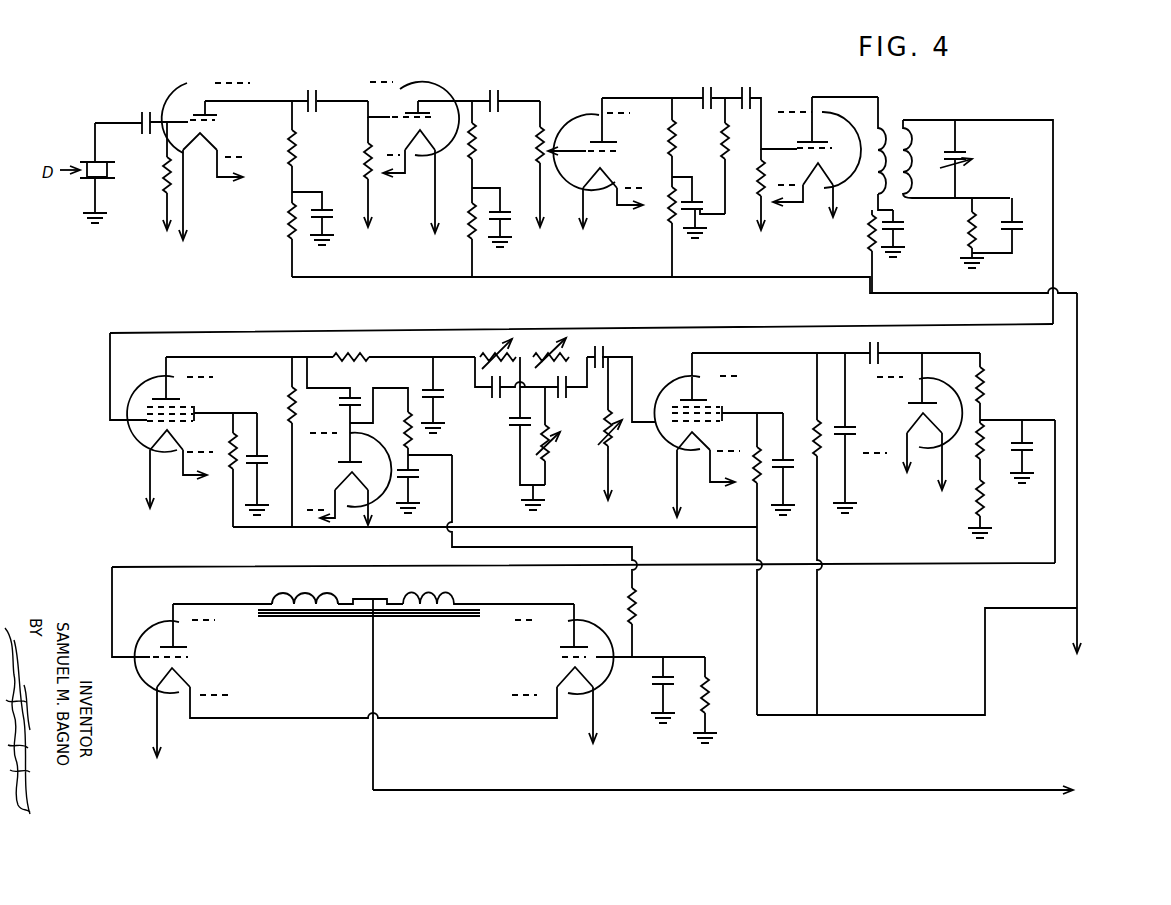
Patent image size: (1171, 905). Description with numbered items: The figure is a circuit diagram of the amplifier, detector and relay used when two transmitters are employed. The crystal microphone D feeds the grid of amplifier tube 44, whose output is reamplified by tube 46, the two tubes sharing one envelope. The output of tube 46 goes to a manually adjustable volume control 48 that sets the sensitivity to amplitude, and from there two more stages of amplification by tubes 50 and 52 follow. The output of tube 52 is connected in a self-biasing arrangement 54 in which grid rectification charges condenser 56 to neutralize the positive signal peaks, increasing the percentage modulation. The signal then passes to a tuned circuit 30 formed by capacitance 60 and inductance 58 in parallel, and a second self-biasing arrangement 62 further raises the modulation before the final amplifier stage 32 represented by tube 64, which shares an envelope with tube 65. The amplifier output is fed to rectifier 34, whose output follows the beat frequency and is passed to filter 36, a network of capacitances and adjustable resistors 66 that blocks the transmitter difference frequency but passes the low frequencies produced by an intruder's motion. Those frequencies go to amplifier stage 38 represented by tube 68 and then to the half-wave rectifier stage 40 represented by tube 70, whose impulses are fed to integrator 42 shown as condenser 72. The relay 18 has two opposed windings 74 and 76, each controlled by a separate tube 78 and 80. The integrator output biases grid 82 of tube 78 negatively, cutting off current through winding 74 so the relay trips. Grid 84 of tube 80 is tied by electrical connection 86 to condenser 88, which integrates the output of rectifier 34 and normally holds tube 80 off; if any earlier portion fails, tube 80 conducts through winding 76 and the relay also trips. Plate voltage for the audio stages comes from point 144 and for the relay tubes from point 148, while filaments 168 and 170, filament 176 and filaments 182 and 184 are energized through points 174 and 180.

The relay 18 is at (369, 682).
The tuned circuit 30 is at (921, 167).
The final amplifier stage 32 is at (166, 395).
The rectifier 34 is at (353, 487).
The filter 36 is at (500, 325).
The amplifier stage 38 is at (656, 360).
The rectifier stage 40 is at (917, 401).
The integrator 42 is at (1044, 431).
The amplifier tube 44 is at (194, 117).
The tube 46 is at (416, 111).
The volume control 48 is at (561, 127).
The tube 50 is at (597, 136).
The tube 52 is at (819, 131).
The self-biasing arrangement 54 is at (689, 176).
The condenser 56 is at (708, 230).
The inductance 58 is at (921, 180).
The capacitance 60 is at (974, 159).
The self-biasing arrangement 62 is at (1018, 241).
The tube 64 is at (126, 413).
The tube 65 is at (373, 479).
The adjustable resistors 66 is at (563, 400).
The tube 68 is at (718, 402).
The tube 70 is at (945, 427).
The condenser 72 is at (1059, 451).
The winding 74 is at (305, 620).
The winding 76 is at (437, 621).
The tube 78 is at (171, 654).
The tube 80 is at (608, 649).
The grid 82 is at (145, 662).
The grid 84 is at (602, 661).
The electrical connection 86 is at (559, 556).
The condenser 88 is at (424, 462).
The point 144 is at (1095, 484).
The point 148 is at (742, 790).
The filament 168 is at (309, 180).
The filament 170 is at (708, 197).
The point 174 is at (279, 192).
The filament 176 is at (375, 711).
The point 180 is at (660, 213).
The filament 182 is at (235, 477).
The filament 184 is at (795, 461).